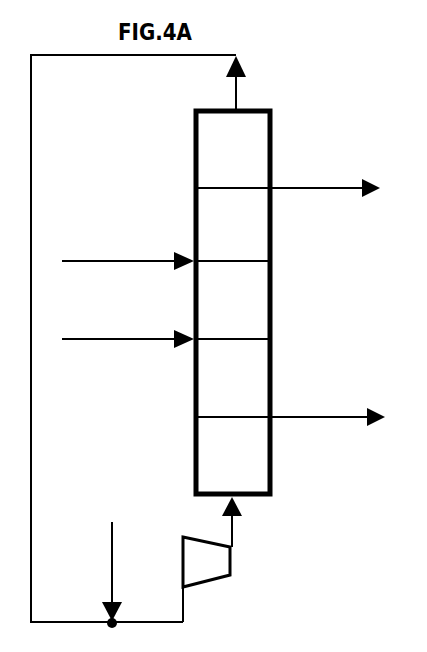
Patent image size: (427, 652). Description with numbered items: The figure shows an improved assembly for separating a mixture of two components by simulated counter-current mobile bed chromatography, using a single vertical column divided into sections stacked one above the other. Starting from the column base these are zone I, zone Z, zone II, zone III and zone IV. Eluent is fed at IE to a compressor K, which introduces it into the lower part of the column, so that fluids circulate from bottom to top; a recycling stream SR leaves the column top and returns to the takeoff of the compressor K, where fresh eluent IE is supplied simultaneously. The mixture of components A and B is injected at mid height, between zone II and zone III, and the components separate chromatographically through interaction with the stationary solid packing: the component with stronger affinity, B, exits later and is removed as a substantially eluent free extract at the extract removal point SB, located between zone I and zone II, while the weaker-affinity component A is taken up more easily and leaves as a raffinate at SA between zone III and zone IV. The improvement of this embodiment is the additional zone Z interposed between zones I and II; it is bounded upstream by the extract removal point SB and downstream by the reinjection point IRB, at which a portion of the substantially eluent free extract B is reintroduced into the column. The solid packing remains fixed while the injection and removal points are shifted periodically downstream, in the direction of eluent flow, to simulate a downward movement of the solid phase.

The zone IV is at (244, 136).
The zone III is at (240, 236).
The zone II is at (232, 314).
The zone Z is at (235, 389).
The zone I is at (228, 469).
The recycling stream SR is at (138, 338).
The raffinate removal point SA is at (325, 177).
The reinjection point for extract portion IRB is at (128, 328).
The extract removal point SB is at (327, 407).
The compressor K is at (212, 559).
The eluent injection point IE is at (100, 575).